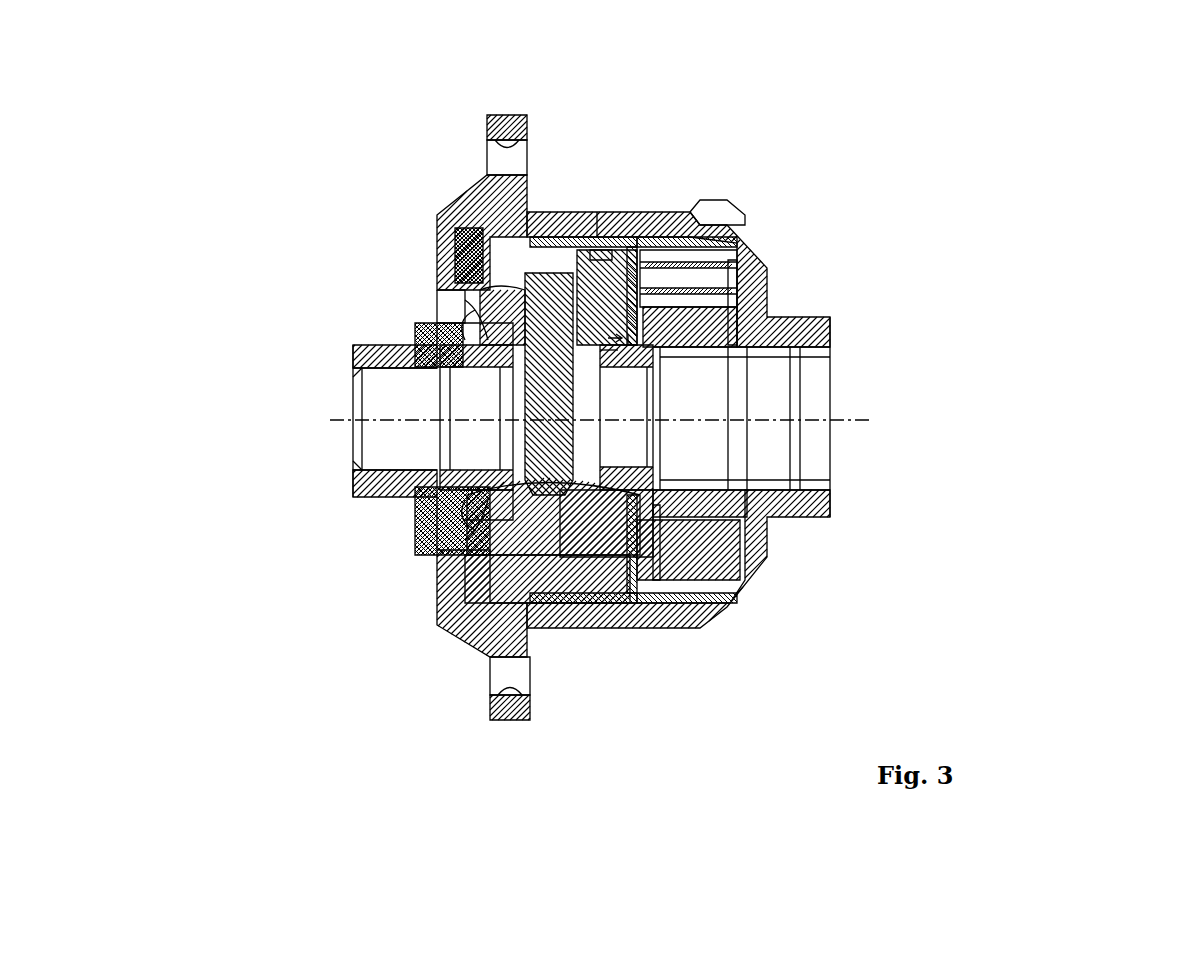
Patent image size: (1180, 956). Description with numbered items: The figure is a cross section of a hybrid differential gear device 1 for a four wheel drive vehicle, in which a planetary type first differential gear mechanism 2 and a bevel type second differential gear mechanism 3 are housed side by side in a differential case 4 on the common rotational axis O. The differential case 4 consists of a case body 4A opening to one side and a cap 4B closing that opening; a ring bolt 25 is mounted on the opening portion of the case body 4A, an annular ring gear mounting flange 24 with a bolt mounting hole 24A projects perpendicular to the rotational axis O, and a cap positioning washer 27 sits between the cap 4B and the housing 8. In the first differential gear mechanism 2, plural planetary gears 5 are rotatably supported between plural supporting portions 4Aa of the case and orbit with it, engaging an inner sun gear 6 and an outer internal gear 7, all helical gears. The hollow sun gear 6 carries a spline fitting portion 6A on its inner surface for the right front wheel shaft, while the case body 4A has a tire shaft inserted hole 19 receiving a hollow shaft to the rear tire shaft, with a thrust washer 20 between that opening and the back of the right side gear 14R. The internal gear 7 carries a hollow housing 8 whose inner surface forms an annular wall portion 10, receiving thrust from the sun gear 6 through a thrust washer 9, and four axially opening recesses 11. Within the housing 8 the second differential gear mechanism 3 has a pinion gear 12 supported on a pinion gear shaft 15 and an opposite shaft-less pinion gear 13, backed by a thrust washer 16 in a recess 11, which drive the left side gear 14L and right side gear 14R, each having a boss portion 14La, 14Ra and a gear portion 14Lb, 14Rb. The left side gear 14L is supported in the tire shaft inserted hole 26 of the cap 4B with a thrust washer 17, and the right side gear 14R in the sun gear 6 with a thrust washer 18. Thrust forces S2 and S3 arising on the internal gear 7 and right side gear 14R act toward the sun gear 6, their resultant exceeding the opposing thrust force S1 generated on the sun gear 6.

The hybrid differential gear device 1 is at (838, 106).
The first differential gear mechanism 2 is at (873, 366).
The second differential gear mechanism 3 is at (626, 341).
The differential case 4 is at (572, 431).
The case body 4A is at (646, 450).
The plural supporting portions 4Aa is at (690, 628).
The cap 4B is at (419, 540).
The planetary gears 5 is at (730, 270).
The sun gear 6 is at (864, 436).
The spline fitting portion 6A is at (795, 482).
The internal gear 7 is at (720, 242).
The housing 8 is at (551, 205).
The thrust washer 9 is at (700, 215).
The annular wall portion 10 is at (635, 222).
The recesses 11 is at (448, 252).
The pinion gear 12 is at (495, 322).
The pinion gear 13 is at (560, 600).
The left side gear 14L is at (334, 408).
The boss portion 14La is at (455, 355).
The gear portion 14Lb is at (480, 338).
The right side gear 14R is at (751, 536).
The boss portion 14Ra is at (715, 575).
The gear portion 14Rb is at (588, 595).
The pinion gear shaft 15 is at (545, 272).
The thrust washer 16 is at (598, 232).
The thrust washer 17 is at (432, 510).
The thrust washer 18 is at (705, 585).
The tire shaft inserted hole 19 is at (790, 360).
The thrust washer 20 is at (740, 322).
The ring gear mounting flange 24 is at (502, 115).
The bolt mounting hole 24A is at (523, 115).
The ring bolt 25 is at (460, 268).
The tire shaft inserted hole 26 is at (385, 380).
The cap positioning washer 27 is at (470, 245).
The rotational axis O is at (835, 412).
The thrust force S1 is at (655, 358).
The thrust force S2 is at (598, 212).
The thrust force S3 is at (604, 362).